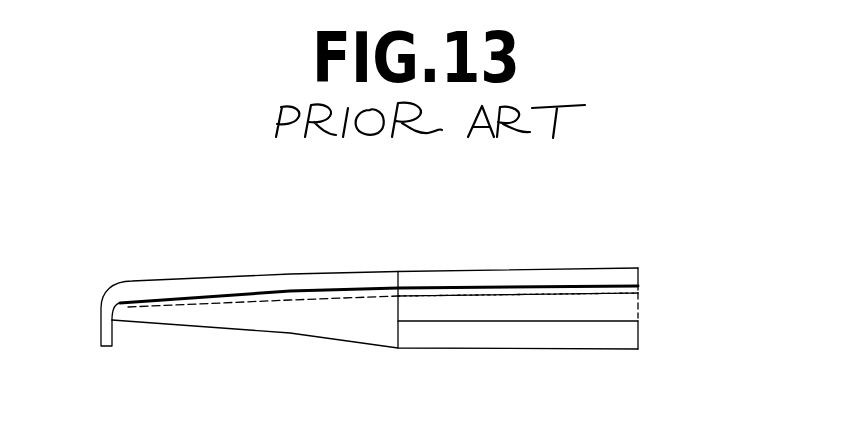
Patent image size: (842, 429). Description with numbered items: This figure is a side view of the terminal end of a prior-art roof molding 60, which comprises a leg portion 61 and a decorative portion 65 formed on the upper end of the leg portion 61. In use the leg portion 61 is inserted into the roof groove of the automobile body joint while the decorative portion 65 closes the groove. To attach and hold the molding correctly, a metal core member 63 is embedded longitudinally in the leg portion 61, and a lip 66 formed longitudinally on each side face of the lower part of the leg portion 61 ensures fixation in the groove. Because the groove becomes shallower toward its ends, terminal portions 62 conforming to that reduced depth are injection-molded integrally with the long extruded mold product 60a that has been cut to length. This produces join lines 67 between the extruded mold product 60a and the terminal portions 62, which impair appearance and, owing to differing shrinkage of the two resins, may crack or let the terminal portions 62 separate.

The roof molding 60 is at (161, 258).
The extruded mold product 60a is at (525, 267).
The leg portion 61 is at (633, 294).
The terminal portions 62 is at (280, 270).
The metal core member 63 is at (352, 287).
The decorative portion 65 is at (607, 277).
The lip (fin) 66 is at (632, 338).
The join lines 67 is at (398, 276).